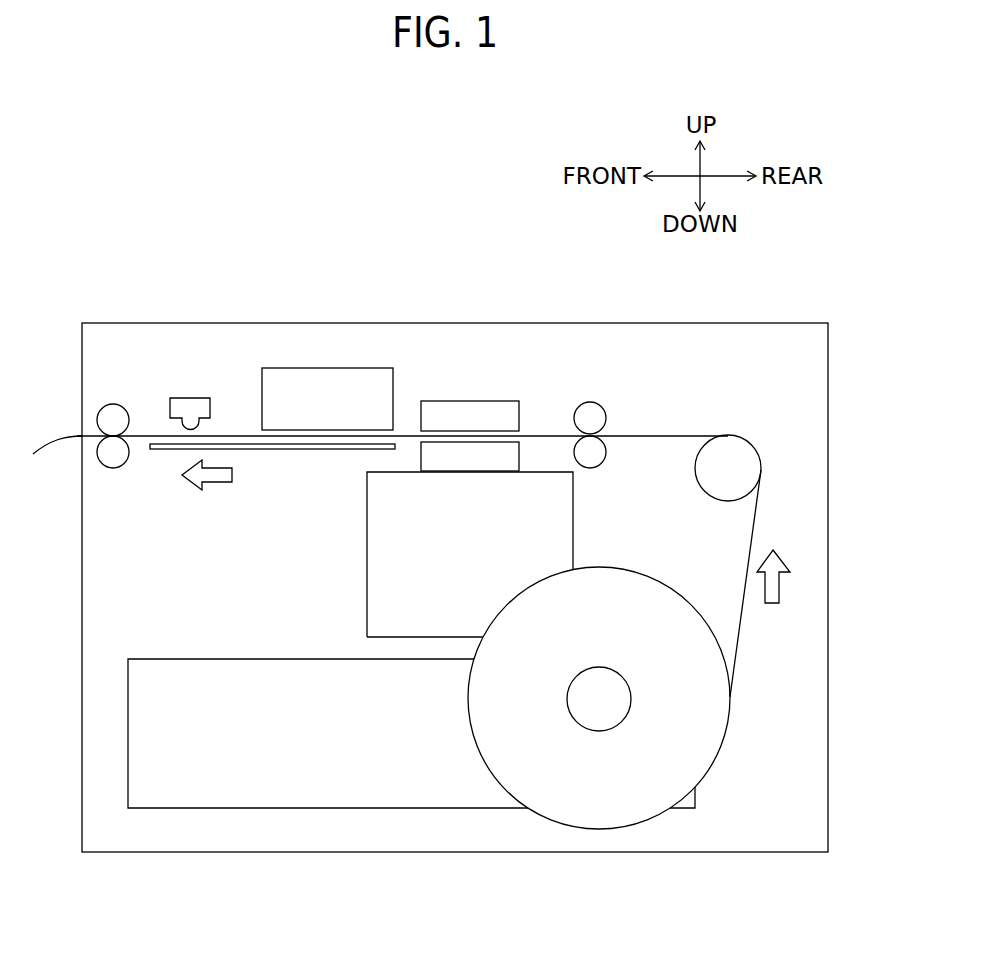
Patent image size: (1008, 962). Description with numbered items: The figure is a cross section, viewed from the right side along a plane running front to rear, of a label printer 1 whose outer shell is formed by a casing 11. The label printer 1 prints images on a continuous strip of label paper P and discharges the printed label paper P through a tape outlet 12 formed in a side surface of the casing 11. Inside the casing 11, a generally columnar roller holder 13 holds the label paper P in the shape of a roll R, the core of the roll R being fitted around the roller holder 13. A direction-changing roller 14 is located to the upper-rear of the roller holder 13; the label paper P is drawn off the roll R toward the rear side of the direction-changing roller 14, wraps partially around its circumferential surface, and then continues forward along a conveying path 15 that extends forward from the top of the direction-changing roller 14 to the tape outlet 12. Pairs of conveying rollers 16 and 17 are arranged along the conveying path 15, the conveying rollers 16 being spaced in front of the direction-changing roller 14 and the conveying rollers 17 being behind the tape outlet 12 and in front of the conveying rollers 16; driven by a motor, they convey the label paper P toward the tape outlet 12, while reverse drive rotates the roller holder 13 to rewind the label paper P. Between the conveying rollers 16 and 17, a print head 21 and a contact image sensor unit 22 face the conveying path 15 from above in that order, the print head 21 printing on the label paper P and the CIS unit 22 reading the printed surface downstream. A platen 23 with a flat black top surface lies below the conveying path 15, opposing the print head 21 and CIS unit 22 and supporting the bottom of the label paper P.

The label printer 1 is at (429, 917).
The casing 11 is at (828, 783).
The tape outlet 12 is at (80, 433).
The roller holder 13 is at (608, 720).
The direction-changing roller 14 is at (743, 445).
The conveying path 15 is at (257, 440).
The conveying rollers 16 is at (603, 450).
The conveying rollers 17 is at (127, 450).
The print head 21 is at (470, 410).
The contact image sensor (CIS) unit 22 is at (192, 398).
The platen 23 is at (313, 450).
The label paper P is at (692, 433).
The roll R is at (470, 740).